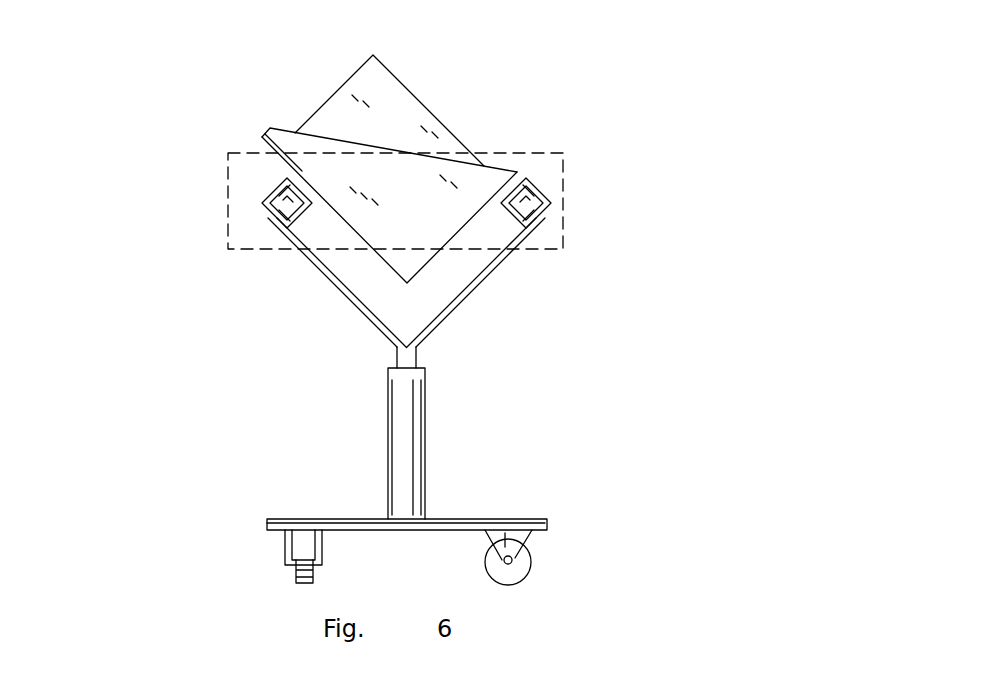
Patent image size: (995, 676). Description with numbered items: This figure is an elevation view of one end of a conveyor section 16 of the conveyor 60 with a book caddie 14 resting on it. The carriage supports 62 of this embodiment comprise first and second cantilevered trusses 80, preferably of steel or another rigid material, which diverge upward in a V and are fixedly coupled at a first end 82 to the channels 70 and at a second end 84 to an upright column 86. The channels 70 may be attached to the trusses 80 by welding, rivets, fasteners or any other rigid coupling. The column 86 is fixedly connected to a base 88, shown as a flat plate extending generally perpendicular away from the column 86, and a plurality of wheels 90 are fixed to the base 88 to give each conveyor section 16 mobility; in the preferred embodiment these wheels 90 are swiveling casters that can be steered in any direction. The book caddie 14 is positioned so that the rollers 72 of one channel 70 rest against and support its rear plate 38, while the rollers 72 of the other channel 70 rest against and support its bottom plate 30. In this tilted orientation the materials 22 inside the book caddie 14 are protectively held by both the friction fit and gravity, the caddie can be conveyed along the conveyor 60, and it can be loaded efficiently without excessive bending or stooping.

The book caddie 14 is at (281, 128).
The conveyor section 16 is at (728, 138).
The materials 22 is at (390, 66).
The bottom plate 30 is at (428, 254).
The rear plate 38 is at (348, 222).
The conveyor 60 is at (574, 259).
The carriage supports 62 is at (192, 202).
The channels 70 is at (267, 194).
The rollers 72 is at (283, 167).
The cantilevered trusses 80 is at (340, 290).
The first end 82 is at (275, 222).
The second end 84 is at (417, 360).
The column 86 is at (427, 395).
The base 88 is at (457, 519).
The wheels 90 is at (323, 550).